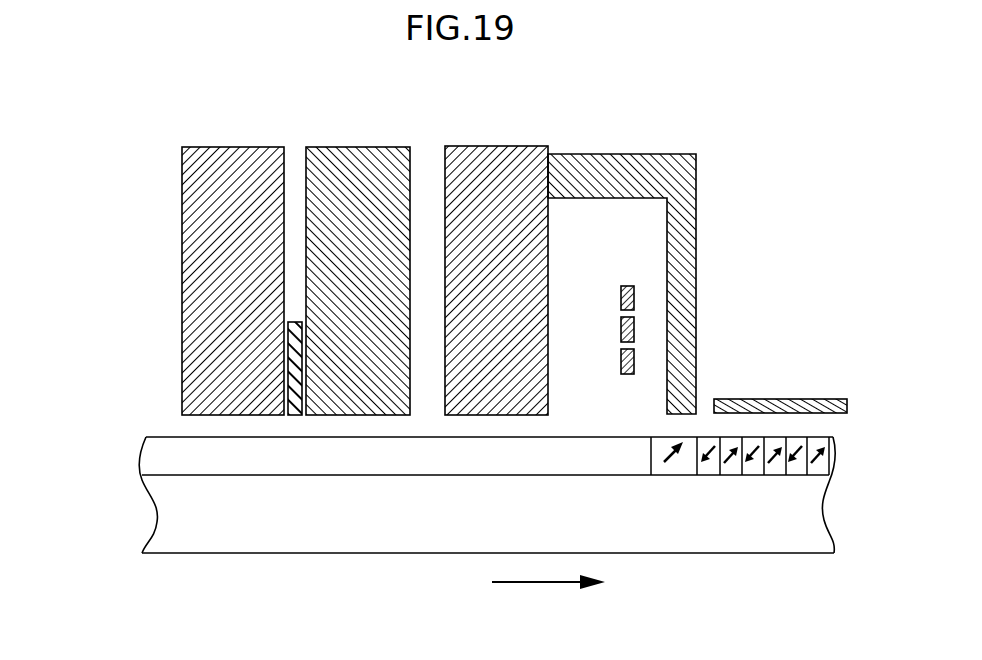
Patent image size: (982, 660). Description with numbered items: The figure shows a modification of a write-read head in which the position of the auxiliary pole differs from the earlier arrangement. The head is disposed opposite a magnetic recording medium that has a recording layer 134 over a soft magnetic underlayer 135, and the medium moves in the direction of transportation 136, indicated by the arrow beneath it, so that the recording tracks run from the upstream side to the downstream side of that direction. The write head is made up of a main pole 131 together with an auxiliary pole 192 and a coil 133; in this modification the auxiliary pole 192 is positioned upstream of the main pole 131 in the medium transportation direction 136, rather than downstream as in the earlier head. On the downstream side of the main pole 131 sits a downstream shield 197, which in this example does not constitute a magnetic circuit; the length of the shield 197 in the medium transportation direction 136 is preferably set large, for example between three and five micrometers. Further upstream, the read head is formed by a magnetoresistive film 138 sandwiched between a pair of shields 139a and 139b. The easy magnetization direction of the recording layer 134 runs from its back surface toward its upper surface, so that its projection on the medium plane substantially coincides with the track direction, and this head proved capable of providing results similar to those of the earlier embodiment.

The shield 139a is at (210, 235).
The shield 139b is at (372, 178).
The magnetoresistive film 138 is at (293, 344).
The auxiliary pole 192 is at (485, 170).
The main pole 131 is at (683, 317).
The coil 133 is at (621, 312).
The downstream shield 197 is at (762, 398).
The recording layer 134 is at (198, 455).
The soft magnetic underlayer 135 is at (200, 522).
The direction of transportation of the medium 136 is at (552, 583).